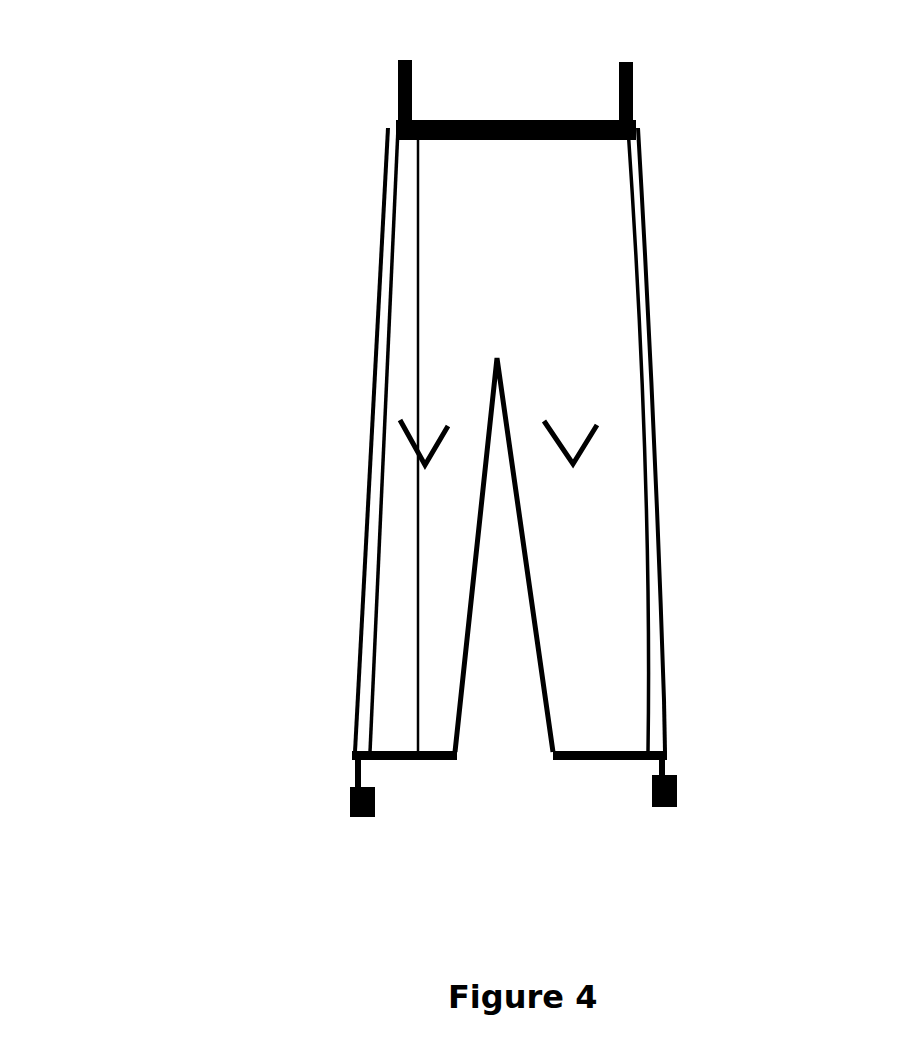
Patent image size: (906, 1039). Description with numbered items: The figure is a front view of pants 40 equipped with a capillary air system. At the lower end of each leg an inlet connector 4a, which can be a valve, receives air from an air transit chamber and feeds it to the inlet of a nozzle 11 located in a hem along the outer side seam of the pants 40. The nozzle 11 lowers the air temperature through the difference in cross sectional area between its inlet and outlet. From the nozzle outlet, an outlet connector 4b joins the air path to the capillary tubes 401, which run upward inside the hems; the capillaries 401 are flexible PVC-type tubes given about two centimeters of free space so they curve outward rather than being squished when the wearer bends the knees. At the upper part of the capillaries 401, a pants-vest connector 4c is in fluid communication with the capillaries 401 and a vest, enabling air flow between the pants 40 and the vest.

The pants 40 is at (177, 133).
The capillary tubes 401 is at (378, 380).
The outlet connector 4b is at (660, 566).
The nozzle 11 is at (667, 720).
The pants-vest connector 4c is at (398, 67).
The inlet connector 4a is at (350, 811).